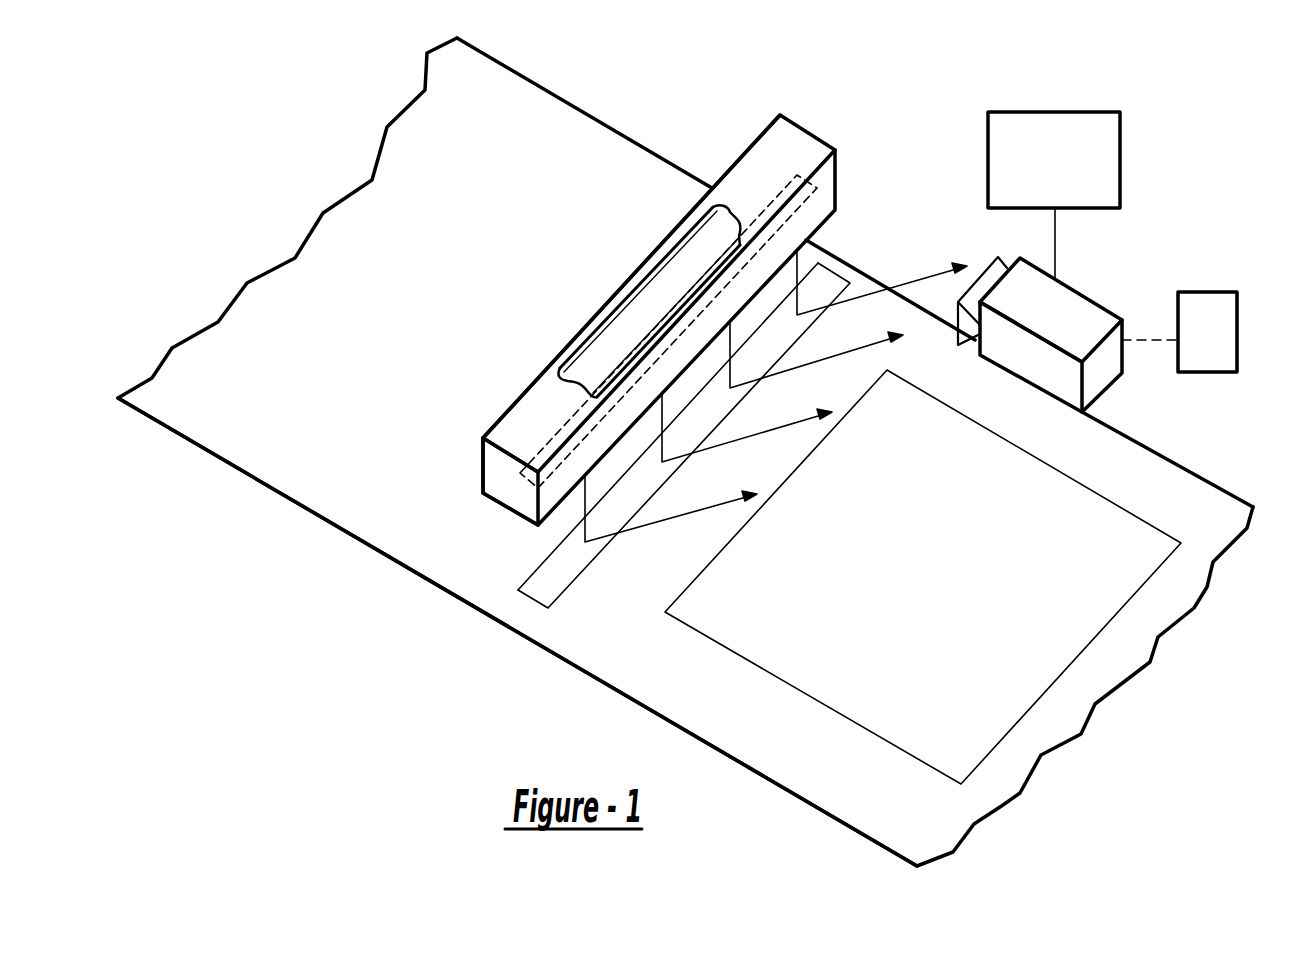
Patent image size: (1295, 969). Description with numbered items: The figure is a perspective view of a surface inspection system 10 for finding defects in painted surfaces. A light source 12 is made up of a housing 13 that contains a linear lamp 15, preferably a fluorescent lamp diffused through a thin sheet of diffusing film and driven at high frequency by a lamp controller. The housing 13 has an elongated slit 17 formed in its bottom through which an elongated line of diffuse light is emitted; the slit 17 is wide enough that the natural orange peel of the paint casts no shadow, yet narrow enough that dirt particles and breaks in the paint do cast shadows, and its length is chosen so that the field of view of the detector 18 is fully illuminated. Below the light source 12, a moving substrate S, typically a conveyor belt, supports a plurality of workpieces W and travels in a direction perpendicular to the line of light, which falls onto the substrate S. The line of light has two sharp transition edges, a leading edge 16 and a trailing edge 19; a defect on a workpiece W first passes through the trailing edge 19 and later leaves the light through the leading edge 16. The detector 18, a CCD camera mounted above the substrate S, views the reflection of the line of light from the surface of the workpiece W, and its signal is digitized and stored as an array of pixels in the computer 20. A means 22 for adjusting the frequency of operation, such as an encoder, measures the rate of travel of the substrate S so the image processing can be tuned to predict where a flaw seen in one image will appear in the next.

The surface inspection system 10 is at (474, 638).
The light source 12 is at (640, 241).
The housing 13 is at (563, 422).
The linear lamp 15 is at (590, 338).
The leading edge 16 is at (535, 570).
The elongated slit 17 is at (483, 478).
The detector 18 is at (1093, 298).
The trailing edge 19 is at (563, 595).
The computer 20 is at (1070, 112).
The means for adjusting the frequency of operation 22 is at (1222, 292).
The moving substrate S is at (378, 555).
The workpiece W is at (843, 717).